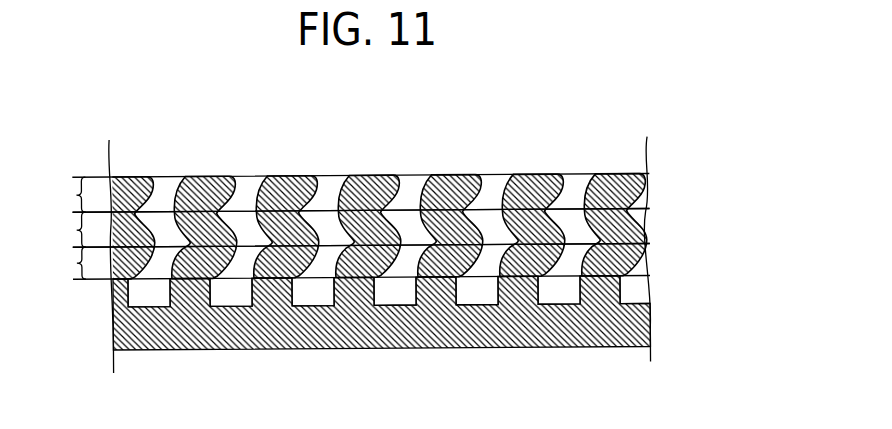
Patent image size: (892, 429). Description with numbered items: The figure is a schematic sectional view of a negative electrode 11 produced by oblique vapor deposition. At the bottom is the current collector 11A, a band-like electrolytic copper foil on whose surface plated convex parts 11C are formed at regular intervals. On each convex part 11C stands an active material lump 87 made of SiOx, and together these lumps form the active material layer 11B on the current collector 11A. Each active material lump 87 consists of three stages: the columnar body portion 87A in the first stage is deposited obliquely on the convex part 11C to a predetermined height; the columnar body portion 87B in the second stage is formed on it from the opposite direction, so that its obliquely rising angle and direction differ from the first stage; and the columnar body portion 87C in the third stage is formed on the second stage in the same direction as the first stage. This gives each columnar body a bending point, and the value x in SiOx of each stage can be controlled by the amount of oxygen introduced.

The negative electrode 11 is at (633, 137).
The current collector 11A is at (247, 337).
The active material layer 11B is at (668, 173).
The convex part 11C is at (295, 350).
The active material lump 87 is at (528, 175).
The columnar body portion in a first stage 87A is at (75, 265).
The columnar body portion in a second stage 87B is at (77, 230).
The columnar body portion in a third stage 87C is at (73, 195).